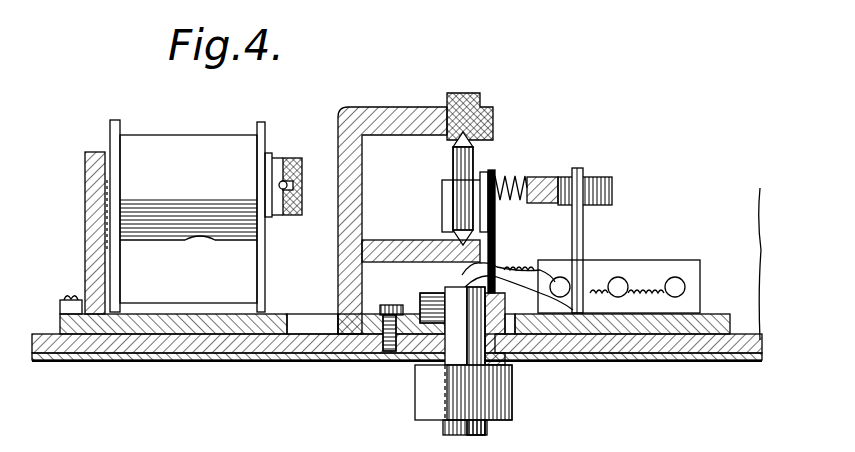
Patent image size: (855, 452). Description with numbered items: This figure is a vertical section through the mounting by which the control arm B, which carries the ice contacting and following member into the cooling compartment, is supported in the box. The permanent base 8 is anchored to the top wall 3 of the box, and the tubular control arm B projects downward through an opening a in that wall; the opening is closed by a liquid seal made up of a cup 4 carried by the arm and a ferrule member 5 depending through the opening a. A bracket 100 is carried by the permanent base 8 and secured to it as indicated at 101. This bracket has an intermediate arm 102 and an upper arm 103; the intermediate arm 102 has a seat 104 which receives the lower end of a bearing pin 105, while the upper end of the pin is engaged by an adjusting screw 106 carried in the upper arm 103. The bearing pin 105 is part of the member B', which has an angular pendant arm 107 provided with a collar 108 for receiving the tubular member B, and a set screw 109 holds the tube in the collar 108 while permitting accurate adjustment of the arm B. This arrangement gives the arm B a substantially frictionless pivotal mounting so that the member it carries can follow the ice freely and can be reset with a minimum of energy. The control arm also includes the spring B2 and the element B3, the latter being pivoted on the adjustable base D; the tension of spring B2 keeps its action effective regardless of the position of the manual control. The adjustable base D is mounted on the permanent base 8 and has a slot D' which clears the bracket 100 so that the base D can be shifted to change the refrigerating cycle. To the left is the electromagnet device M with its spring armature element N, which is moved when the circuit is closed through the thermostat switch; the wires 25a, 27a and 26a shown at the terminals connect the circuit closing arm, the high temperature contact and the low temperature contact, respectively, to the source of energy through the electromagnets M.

The top wall 3 is at (132, 362).
The permanent base 8 is at (302, 333).
The electromagnet device M is at (182, 152).
The spring armature element N is at (292, 156).
The bracket 100 is at (382, 112).
The angular pendant arm 107 is at (356, 210).
The intermediate arm 102 is at (393, 246).
The set screw 109 is at (402, 352).
The securing means 101 is at (387, 306).
The collar 108 is at (428, 291).
The upper arm 103 is at (495, 126).
The adjusting screw 106 is at (478, 138).
The bearing pin 105 is at (452, 159).
The control arm part B' is at (451, 231).
The spring B2 is at (513, 175).
The control arm element B3 is at (600, 176).
The seat 104 is at (490, 250).
The wire 25a is at (570, 260).
The wire 27a is at (598, 290).
The wire 26a is at (633, 296).
The adjustable base D is at (638, 264).
The slot D' is at (557, 350).
The opening a is at (505, 357).
The ferrule member 5 is at (470, 368).
The cup 4 is at (420, 404).
The control arm B is at (491, 436).